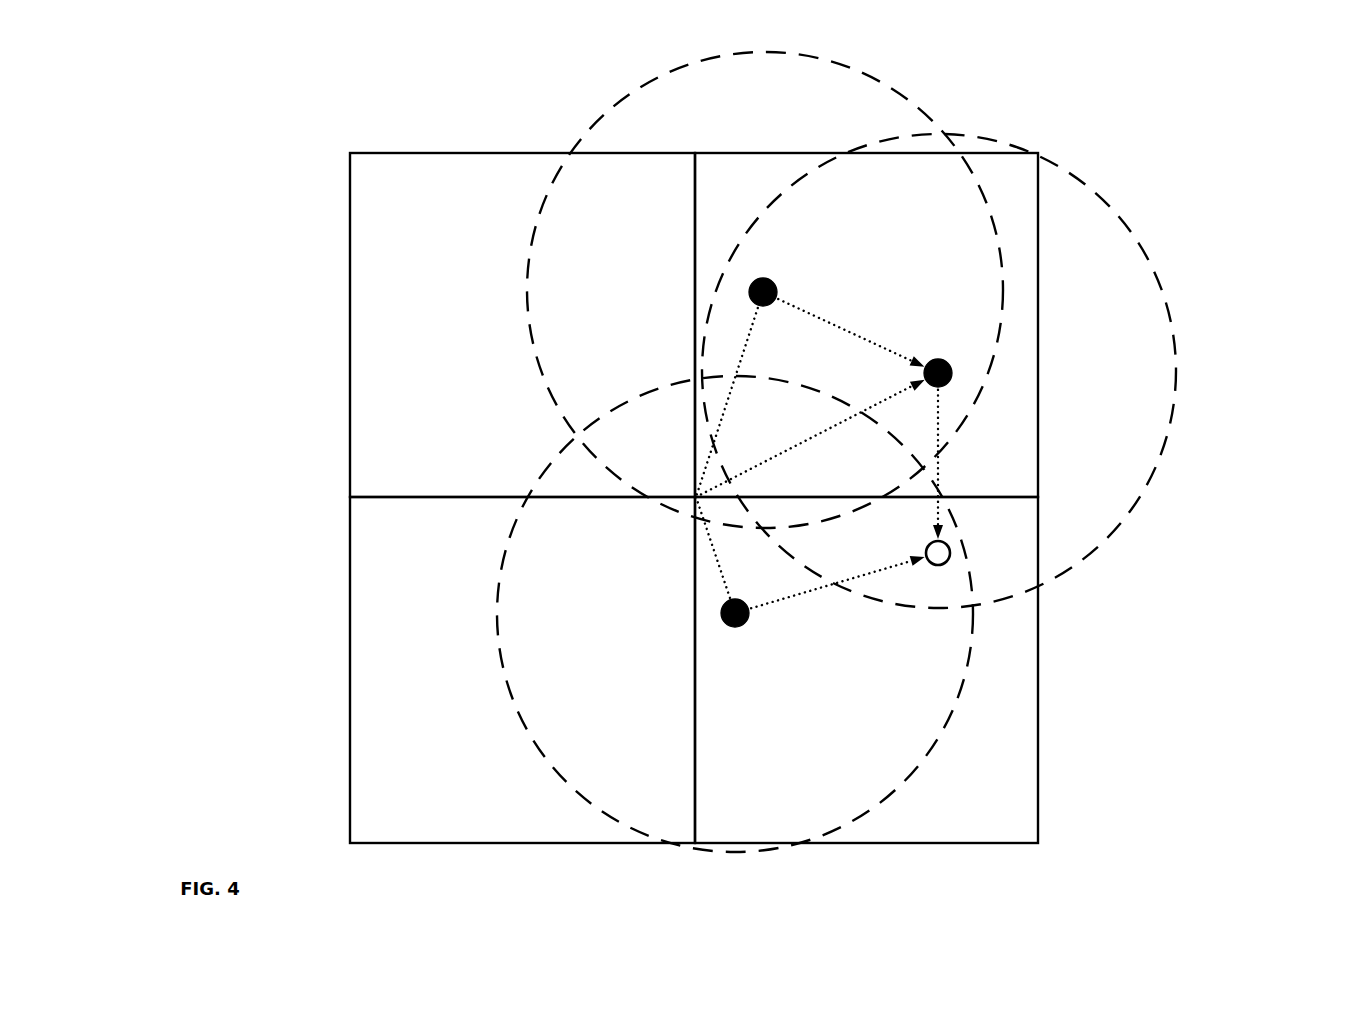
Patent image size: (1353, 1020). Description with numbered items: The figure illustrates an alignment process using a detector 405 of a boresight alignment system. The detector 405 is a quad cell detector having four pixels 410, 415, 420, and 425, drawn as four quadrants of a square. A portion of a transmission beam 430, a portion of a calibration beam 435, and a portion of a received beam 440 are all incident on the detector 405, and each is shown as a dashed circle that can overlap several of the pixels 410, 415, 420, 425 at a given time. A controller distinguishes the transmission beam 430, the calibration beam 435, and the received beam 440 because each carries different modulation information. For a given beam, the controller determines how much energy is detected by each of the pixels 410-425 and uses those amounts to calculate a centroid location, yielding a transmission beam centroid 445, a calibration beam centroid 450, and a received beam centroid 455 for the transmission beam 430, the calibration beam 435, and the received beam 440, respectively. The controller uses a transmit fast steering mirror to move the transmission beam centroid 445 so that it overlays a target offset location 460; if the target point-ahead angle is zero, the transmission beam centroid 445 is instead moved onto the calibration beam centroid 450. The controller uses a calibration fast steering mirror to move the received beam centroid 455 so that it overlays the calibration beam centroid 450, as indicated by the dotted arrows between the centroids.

The detector 405 is at (365, 133).
The pixel 410 is at (377, 255).
The pixel 415 is at (376, 587).
The pixel 420 is at (1000, 720).
The pixel 425 is at (1016, 174).
The transmission beam 430 is at (496, 624).
The calibration beam 435 is at (1152, 260).
The received beam 440 is at (624, 100).
The transmission beam centroid 445 is at (742, 621).
The calibration beam centroid 450 is at (952, 370).
The received beam centroid 455 is at (750, 292).
The target offset location 460 is at (951, 558).